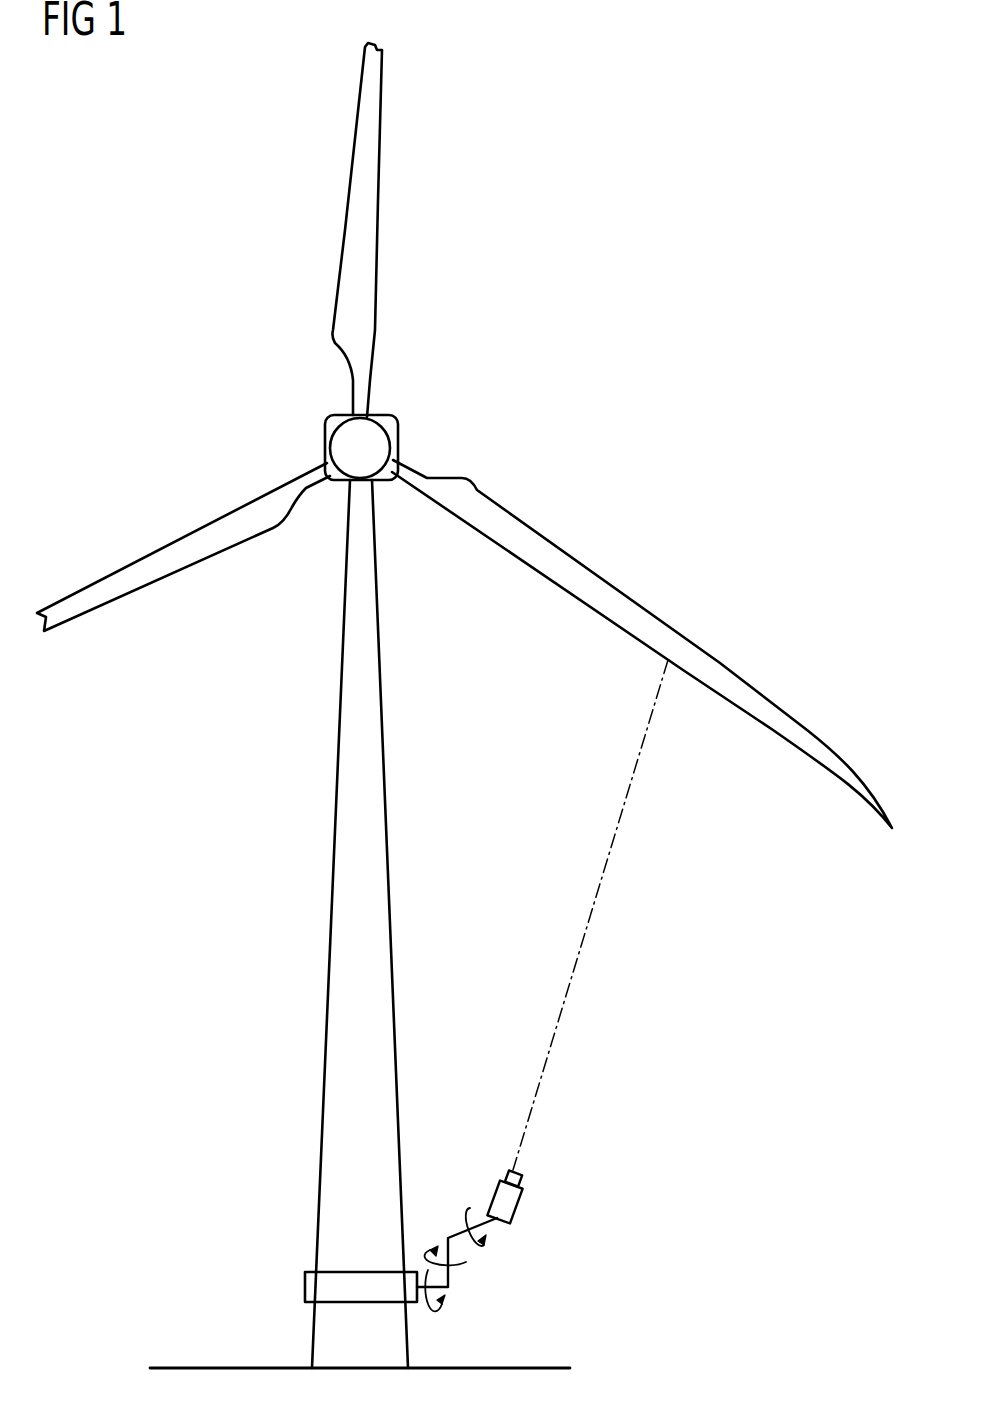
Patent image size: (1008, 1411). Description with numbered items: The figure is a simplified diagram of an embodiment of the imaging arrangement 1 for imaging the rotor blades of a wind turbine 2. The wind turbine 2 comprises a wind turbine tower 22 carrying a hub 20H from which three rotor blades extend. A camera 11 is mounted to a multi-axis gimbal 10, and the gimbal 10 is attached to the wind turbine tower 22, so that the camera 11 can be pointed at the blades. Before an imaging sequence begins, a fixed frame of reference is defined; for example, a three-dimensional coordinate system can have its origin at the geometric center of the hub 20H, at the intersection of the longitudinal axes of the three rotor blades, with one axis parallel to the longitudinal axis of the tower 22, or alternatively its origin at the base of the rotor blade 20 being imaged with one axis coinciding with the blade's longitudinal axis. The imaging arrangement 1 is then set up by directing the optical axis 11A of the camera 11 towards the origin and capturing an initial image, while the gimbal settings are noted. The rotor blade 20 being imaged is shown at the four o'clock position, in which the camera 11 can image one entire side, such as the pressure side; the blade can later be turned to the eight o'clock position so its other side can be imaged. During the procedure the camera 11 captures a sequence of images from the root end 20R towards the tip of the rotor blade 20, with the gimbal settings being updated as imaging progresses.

The imaging arrangement 1 is at (595, 1278).
The wind turbine 2 is at (568, 287).
The multi-axis gimbal 10 is at (457, 1297).
The camera 11 is at (520, 1207).
The optical axis 11A is at (593, 912).
The rotor blade 20 is at (592, 593).
The hub 20H is at (350, 443).
The root end 20R is at (425, 484).
The wind turbine tower 22 is at (390, 922).